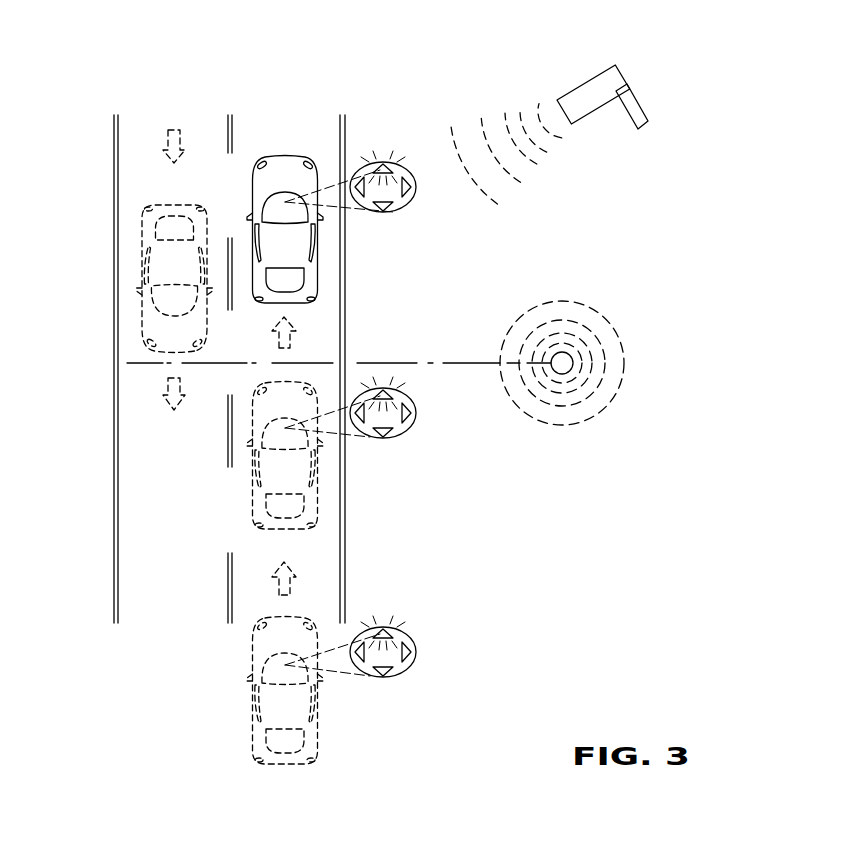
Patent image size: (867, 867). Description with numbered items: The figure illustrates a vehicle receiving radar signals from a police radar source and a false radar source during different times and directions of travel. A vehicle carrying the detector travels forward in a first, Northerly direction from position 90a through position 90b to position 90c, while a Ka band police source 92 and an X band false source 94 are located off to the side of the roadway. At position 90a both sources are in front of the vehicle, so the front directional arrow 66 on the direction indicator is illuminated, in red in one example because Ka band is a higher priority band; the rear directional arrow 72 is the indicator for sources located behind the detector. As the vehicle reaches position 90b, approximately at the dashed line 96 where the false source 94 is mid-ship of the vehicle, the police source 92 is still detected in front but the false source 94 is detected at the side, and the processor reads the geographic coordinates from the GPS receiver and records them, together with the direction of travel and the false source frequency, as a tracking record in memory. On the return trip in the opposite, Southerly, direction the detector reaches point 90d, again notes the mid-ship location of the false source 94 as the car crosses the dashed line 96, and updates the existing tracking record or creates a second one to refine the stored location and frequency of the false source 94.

The first directional arrow 66 is at (383, 164).
The third directional arrow 72 is at (388, 210).
The position 90a is at (318, 701).
The position 90b is at (318, 464).
The position 90c is at (315, 238).
The point 90d is at (143, 266).
The police source 92 is at (580, 88).
The false source 94 is at (566, 359).
The line 96 is at (405, 360).